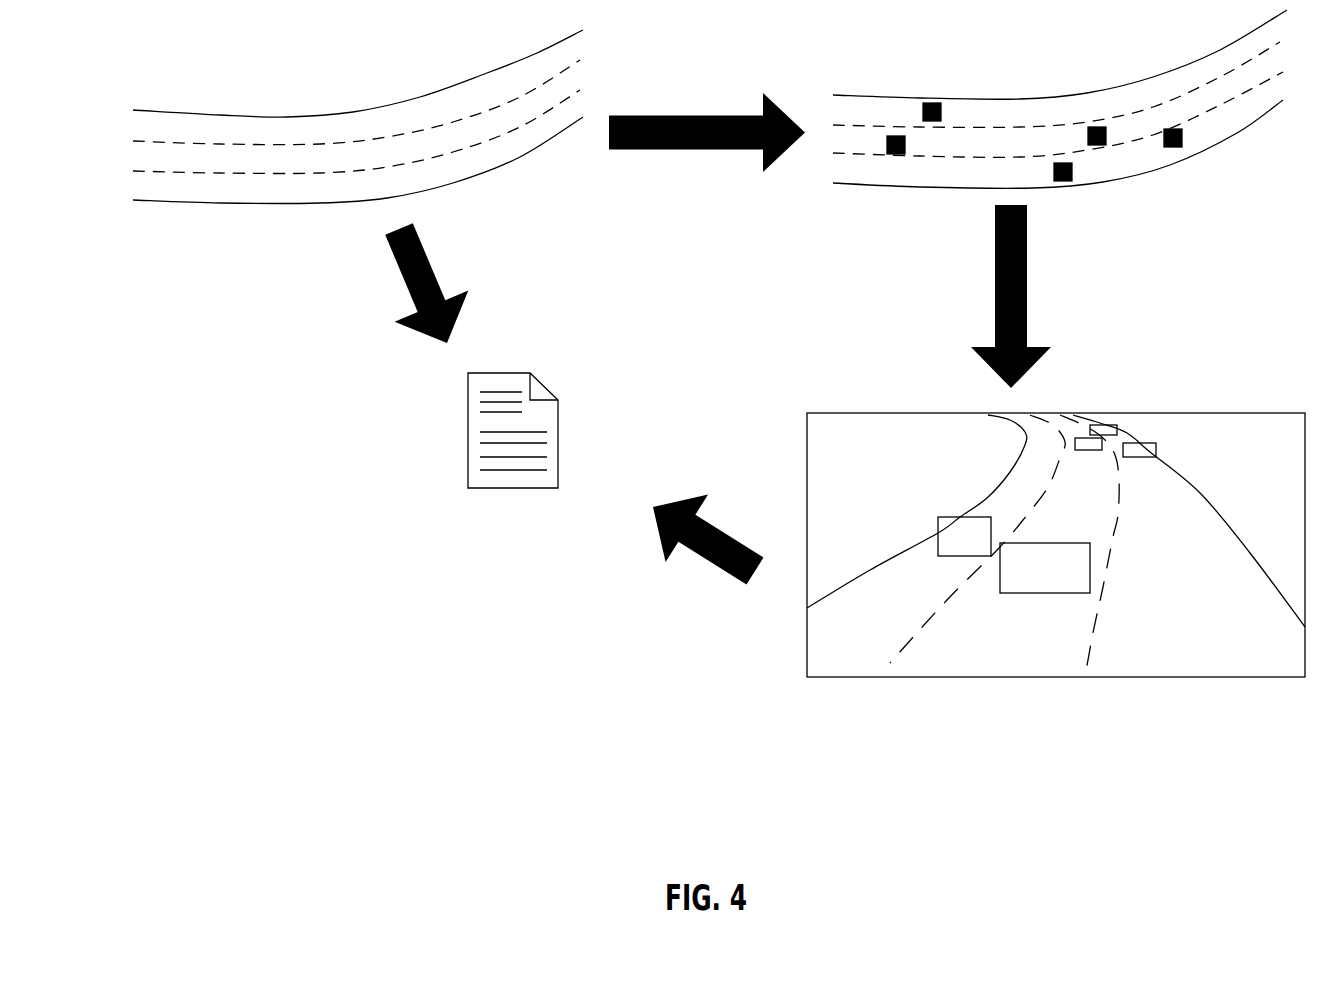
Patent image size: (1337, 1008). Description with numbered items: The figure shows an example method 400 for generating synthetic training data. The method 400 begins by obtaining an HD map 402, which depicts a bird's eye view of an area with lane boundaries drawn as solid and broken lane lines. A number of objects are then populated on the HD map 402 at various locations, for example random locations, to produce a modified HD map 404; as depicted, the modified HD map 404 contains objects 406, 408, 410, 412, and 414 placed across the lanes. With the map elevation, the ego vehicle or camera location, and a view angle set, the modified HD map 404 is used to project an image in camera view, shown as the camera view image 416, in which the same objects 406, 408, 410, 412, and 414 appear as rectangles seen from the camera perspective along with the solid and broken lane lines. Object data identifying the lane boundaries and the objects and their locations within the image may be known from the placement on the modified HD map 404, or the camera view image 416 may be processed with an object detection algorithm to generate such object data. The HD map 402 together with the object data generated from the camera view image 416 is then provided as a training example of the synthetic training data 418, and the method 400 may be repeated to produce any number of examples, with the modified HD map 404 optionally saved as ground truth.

The method for generating synthetic training data 400 is at (323, 638).
The HD map 402 is at (358, 116).
The modified HD map 404 is at (1060, 99).
The object 406 is at (949, 113).
The object 408 is at (919, 145).
The object 410 is at (1078, 173).
The object 412 is at (1114, 131).
The object 414 is at (1188, 143).
The camera view image 416 is at (1056, 563).
The synthetic training data 418 is at (514, 477).